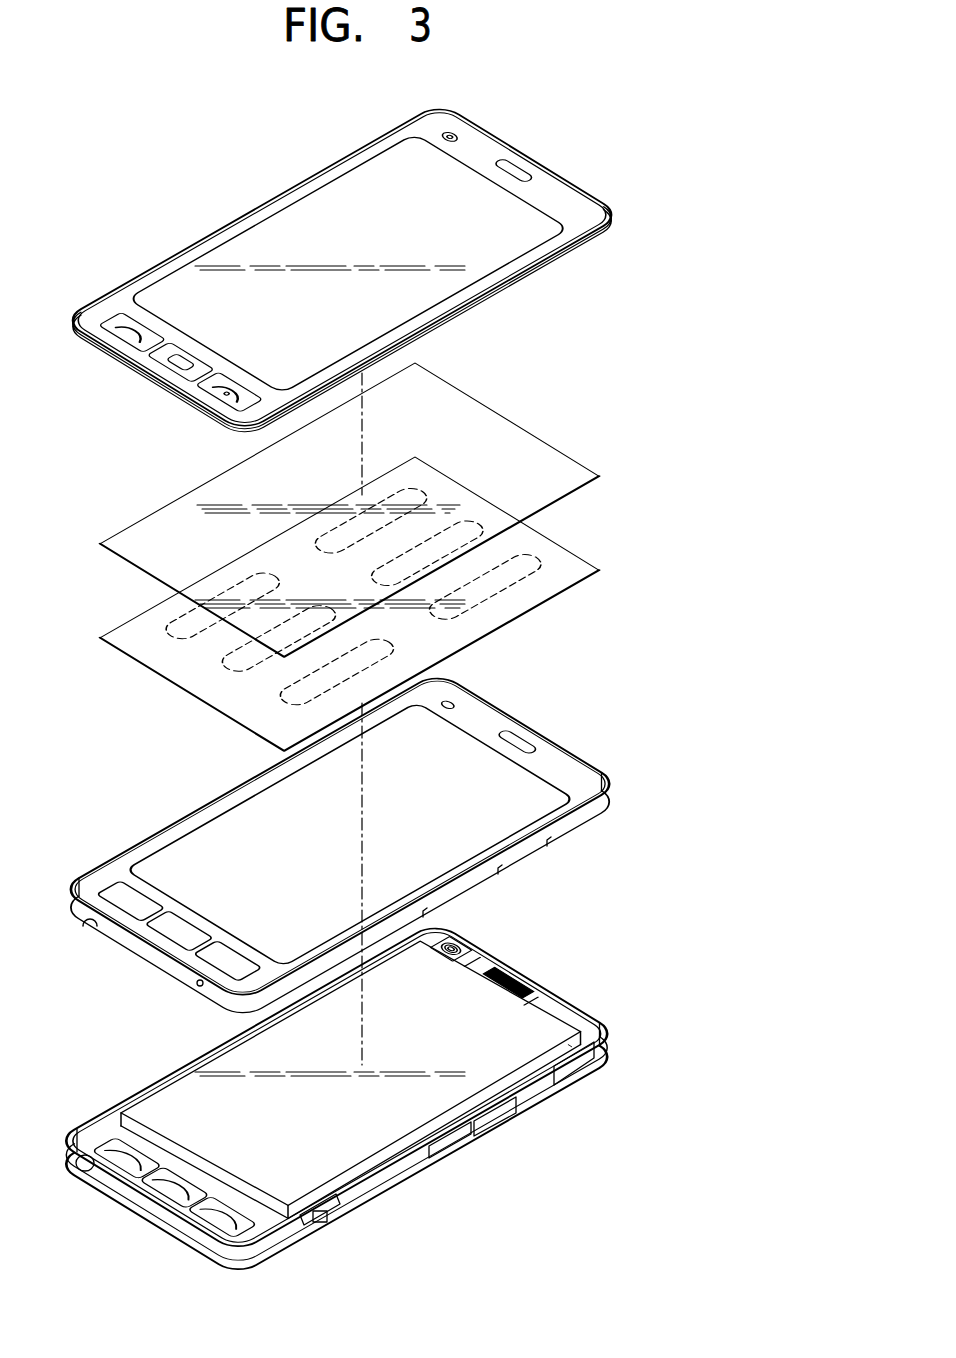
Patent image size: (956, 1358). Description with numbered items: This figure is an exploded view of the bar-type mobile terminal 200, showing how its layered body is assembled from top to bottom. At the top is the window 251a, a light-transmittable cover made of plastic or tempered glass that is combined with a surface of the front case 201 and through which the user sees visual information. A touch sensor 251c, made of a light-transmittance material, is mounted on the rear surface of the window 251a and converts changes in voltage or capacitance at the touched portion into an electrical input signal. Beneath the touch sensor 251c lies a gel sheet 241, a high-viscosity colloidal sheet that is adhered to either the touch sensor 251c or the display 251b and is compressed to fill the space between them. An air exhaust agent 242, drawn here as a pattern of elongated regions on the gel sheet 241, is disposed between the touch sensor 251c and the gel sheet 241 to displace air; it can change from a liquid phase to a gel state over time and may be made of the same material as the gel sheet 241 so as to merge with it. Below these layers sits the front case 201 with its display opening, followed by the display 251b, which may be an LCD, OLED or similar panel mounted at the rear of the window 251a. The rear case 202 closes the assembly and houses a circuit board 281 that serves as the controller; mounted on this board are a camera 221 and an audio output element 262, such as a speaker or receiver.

The mobile terminal 200 is at (650, 341).
The window 251a is at (568, 196).
The touch sensor 251c is at (476, 415).
The gel sheet 241 is at (620, 547).
The air exhaust agent 242 is at (552, 549).
The front case 201 is at (612, 798).
The rear case 202 is at (612, 1048).
The camera 221 is at (461, 939).
The audio output element 262 is at (520, 972).
The display 251b is at (533, 1016).
The circuit board 281 is at (588, 1022).